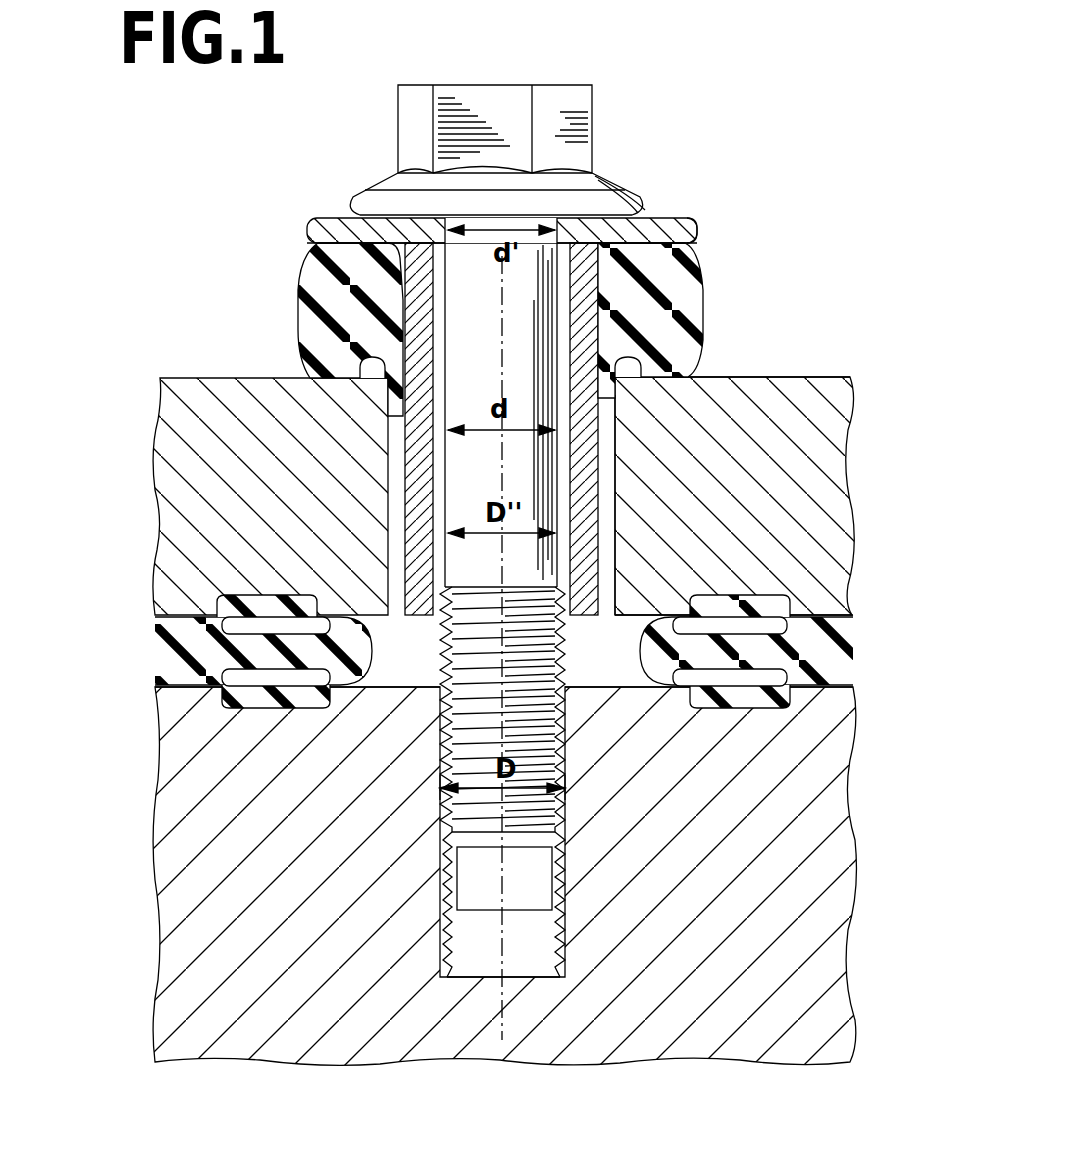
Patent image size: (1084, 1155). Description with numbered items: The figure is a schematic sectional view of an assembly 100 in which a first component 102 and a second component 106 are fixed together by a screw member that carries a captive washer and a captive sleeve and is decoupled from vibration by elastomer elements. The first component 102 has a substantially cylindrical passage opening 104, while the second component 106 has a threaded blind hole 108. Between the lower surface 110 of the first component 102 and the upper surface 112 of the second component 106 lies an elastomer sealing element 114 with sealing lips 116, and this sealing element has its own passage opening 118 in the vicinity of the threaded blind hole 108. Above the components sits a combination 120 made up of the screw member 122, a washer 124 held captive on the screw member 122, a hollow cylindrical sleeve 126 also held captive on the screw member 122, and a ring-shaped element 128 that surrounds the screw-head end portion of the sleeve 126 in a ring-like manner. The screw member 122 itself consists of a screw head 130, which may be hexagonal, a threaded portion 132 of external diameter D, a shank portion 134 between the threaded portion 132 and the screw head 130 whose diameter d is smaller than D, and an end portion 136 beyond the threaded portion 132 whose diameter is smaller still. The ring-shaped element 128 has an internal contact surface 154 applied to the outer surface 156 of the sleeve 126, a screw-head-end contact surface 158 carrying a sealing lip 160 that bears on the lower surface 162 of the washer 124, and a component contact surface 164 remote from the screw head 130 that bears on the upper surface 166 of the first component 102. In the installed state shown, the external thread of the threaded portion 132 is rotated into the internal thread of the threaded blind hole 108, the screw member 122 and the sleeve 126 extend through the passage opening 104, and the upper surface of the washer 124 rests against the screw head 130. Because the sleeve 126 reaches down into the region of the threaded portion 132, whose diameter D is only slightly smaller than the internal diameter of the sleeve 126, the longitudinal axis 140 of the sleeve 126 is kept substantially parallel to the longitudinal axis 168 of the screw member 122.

The assembly 100 is at (782, 152).
The first component 102 is at (853, 395).
The passage opening 104 is at (615, 525).
The second component 106 is at (855, 775).
The threaded blind hole 108 is at (445, 940).
The lower surface 110 is at (858, 630).
The upper surface 112 is at (160, 688).
The elastomer sealing element 114 is at (170, 650).
The sealing lips 116 is at (285, 600).
The passage opening 118 is at (605, 650).
The combination 120 is at (478, 441).
The screw member 122 is at (512, 88).
The washer 124 is at (335, 233).
The hollow cylindrical sleeve 126 is at (690, 283).
The ring-shaped element 128 is at (690, 328).
The screw head 130 is at (422, 95).
The threaded portion 132 is at (565, 818).
The shank portion 134 is at (468, 328).
The end portion 136 is at (530, 885).
The longitudinal axis 140 is at (445, 468).
The internal contact surface 154 is at (340, 300).
The outer surface 156 is at (608, 480).
The screw-head-end contact surface 158 is at (690, 240).
The sealing lip 160 is at (655, 238).
The lower surface 162 is at (330, 258).
The component contact surface 164 is at (632, 385).
The upper surface 166 is at (820, 378).
The longitudinal axis 168 is at (505, 1020).